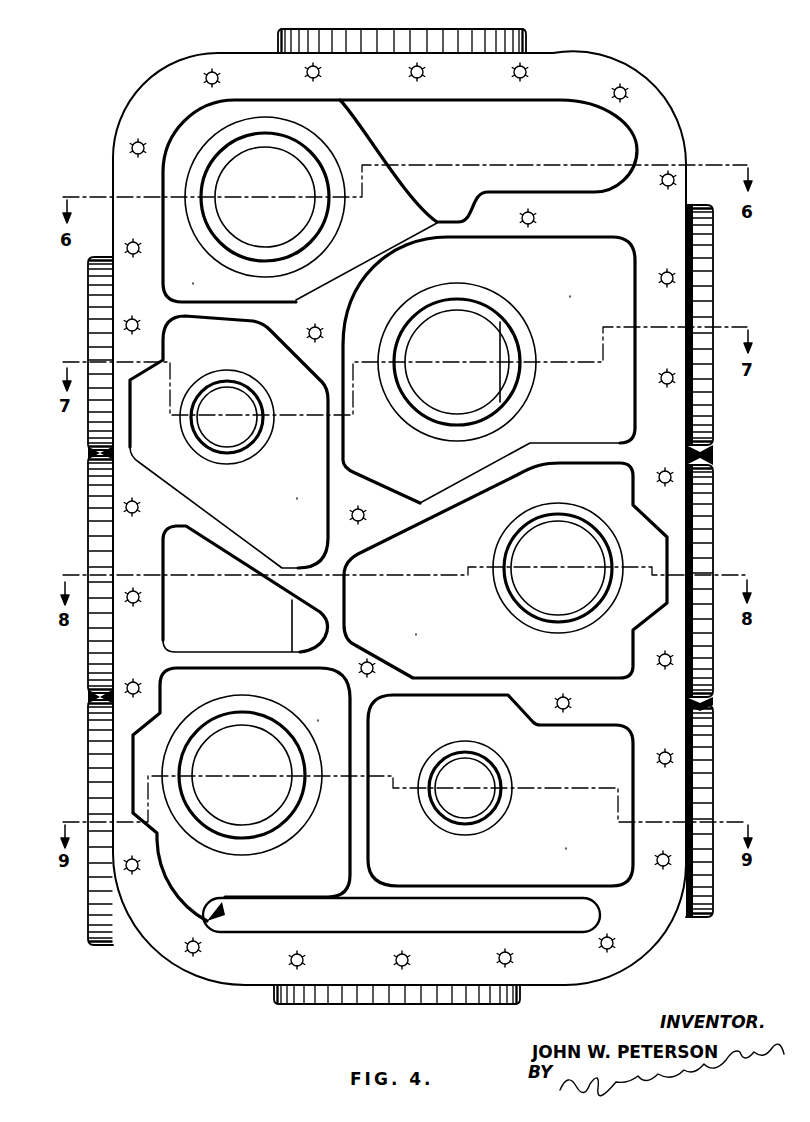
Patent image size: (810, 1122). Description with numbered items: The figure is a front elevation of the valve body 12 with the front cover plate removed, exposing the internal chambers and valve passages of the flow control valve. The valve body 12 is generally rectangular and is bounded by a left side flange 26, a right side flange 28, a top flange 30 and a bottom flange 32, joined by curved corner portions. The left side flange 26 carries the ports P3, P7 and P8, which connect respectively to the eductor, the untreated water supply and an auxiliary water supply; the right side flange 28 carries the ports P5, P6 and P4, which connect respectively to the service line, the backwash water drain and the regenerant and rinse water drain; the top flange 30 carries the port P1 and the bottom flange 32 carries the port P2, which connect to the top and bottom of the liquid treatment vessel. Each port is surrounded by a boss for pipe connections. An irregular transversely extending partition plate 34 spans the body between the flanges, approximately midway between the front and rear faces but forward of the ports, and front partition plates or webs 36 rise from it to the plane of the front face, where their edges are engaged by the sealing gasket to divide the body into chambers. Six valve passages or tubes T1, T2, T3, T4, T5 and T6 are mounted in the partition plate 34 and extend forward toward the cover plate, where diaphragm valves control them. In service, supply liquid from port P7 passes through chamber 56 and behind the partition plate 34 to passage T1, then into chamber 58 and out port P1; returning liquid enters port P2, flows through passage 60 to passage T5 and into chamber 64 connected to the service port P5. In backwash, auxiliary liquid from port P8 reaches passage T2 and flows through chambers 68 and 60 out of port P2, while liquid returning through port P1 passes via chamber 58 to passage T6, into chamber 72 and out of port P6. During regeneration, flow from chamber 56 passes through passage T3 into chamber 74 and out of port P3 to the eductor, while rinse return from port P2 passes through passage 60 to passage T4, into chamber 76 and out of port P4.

The valve body 12 is at (96, 80).
The left side flange 26 is at (113, 187).
The right side flange 28 is at (688, 205).
The top flange 30 is at (247, 53).
The bottom flange 32 is at (252, 990).
The transversely extending partition plate 34 is at (194, 291).
The front partition plate or web 36 is at (371, 258).
The chamber 56 is at (231, 622).
The chamber 58 is at (436, 152).
The passage 60 is at (371, 922).
The chamber 64 is at (592, 401).
The chamber 68 is at (330, 865).
The chamber 72 is at (476, 557).
The chamber 74 is at (262, 507).
The chamber 76 is at (589, 768).
The port P1 is at (426, 30).
The port P2 is at (402, 1005).
The port P3 is at (88, 312).
The port P4 is at (713, 808).
The port P5 is at (713, 294).
The port P6 is at (713, 546).
The port P7 is at (88, 548).
The port P8 is at (88, 806).
The valve passage T1 is at (312, 246).
The valve passage T2 is at (266, 828).
The valve passage T3 is at (258, 436).
The valve passage T4 is at (486, 816).
The valve passage T5 is at (482, 410).
The valve passage T6 is at (590, 610).